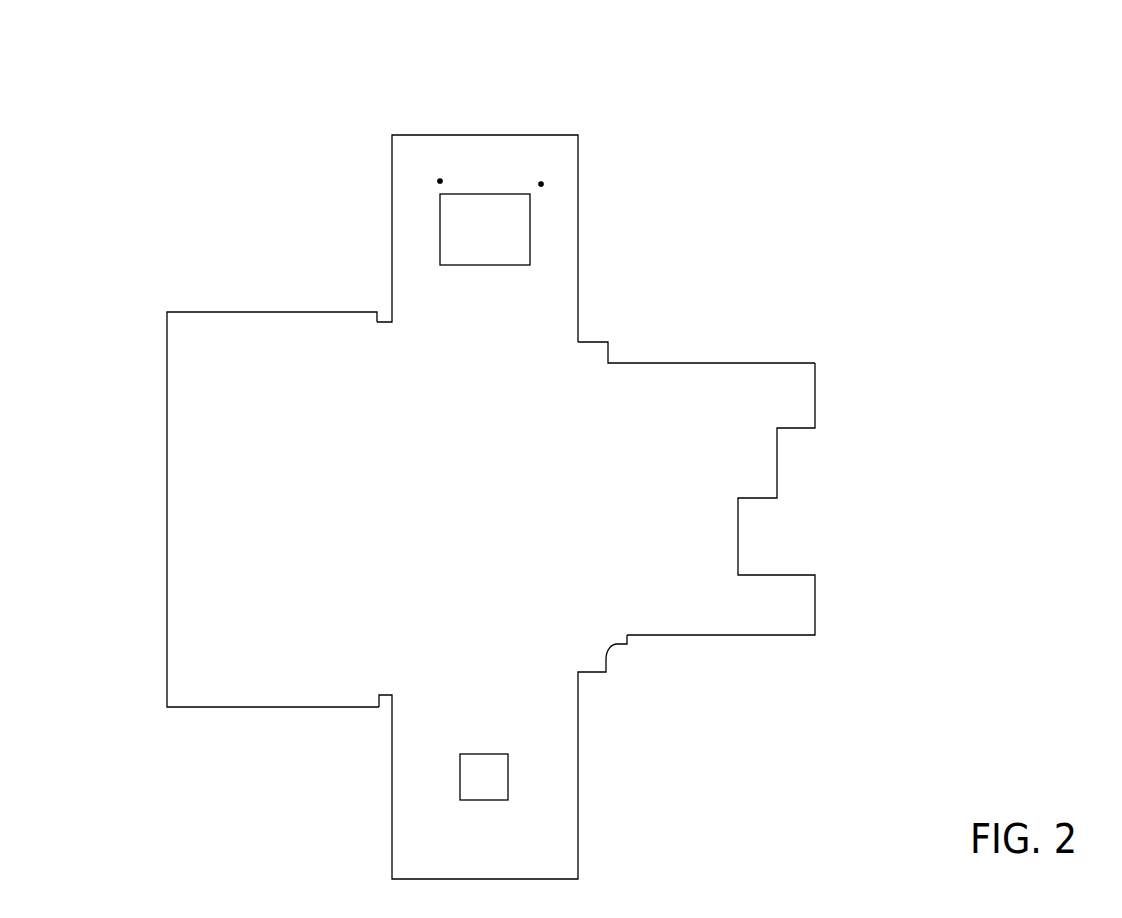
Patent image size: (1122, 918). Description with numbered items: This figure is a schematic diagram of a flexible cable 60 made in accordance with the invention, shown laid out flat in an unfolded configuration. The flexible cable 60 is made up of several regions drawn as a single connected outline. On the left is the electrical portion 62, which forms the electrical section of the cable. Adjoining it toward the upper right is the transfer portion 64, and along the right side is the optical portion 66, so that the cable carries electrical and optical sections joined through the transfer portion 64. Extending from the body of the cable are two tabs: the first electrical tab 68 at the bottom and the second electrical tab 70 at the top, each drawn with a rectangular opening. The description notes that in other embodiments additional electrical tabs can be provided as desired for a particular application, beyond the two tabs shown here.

The flexible cable 60 is at (628, 125).
The electrical portion 62 is at (259, 620).
The transfer portion 64 is at (635, 407).
The optical portion 66 is at (751, 408).
The first electrical tab 68 is at (560, 822).
The second electrical tab 70 is at (412, 169).